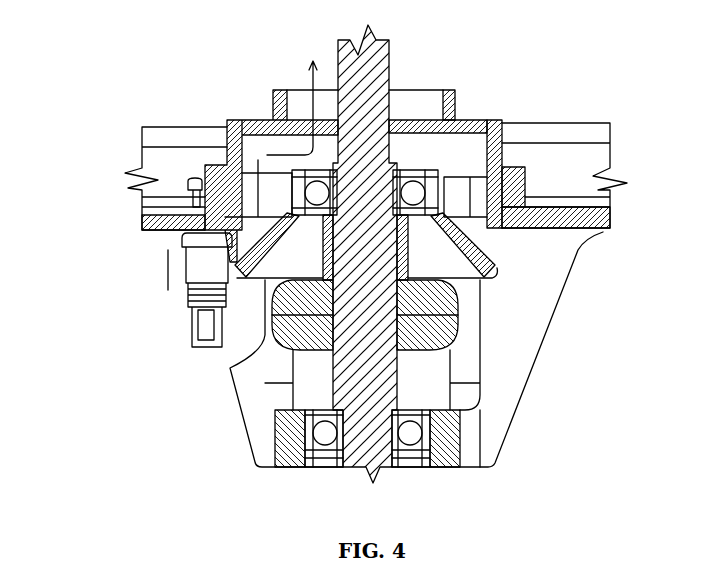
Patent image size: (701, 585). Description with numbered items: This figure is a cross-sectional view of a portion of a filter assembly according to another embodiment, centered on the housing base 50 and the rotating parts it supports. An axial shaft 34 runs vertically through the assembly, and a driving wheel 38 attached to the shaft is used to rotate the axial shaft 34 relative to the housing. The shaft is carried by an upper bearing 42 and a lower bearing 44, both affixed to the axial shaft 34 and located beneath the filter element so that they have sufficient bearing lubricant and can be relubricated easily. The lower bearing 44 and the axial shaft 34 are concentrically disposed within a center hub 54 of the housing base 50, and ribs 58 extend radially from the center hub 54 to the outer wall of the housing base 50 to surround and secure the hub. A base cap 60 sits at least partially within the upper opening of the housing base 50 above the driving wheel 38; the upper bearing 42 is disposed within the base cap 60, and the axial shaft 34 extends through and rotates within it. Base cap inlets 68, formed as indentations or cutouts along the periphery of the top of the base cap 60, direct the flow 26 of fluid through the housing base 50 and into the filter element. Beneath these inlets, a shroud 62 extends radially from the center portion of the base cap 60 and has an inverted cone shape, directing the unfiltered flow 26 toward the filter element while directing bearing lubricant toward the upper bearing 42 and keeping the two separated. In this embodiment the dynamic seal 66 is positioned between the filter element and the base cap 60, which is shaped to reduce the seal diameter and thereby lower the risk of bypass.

The flow of fluid 26 is at (232, 192).
The axial shaft 34 is at (390, 74).
The driving wheel 38 is at (283, 338).
The upper bearing 42 is at (168, 258).
The lower bearing 44 is at (299, 468).
The housing base 50 is at (563, 342).
The center hub 54 is at (443, 472).
The ribs 58 is at (525, 390).
The base cap 60 is at (503, 190).
The shroud 62 is at (498, 268).
The dynamic seal 66 is at (455, 102).
The base cap inlets 68 is at (180, 231).